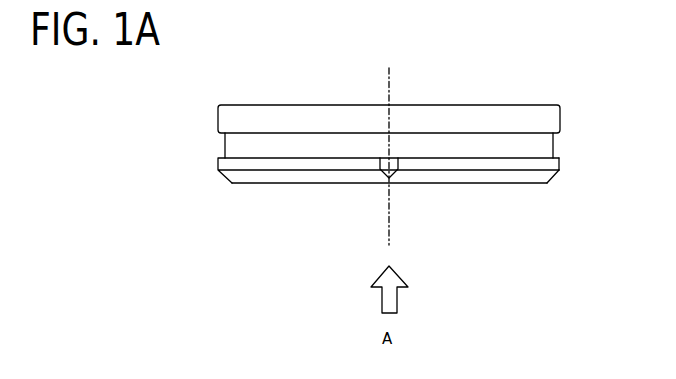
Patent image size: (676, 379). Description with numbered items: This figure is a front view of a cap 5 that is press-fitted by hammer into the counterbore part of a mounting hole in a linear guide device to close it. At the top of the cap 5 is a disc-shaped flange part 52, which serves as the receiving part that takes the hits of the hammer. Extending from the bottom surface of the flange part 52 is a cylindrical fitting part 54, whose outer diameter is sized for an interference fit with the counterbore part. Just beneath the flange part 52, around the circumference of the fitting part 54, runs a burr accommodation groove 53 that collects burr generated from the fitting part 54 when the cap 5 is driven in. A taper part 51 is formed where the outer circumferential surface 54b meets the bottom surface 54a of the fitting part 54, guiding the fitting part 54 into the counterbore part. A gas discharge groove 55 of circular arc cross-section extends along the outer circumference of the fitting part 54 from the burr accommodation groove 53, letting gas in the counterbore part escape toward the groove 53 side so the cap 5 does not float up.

The cap 5 is at (401, 133).
The taper part 51 is at (545, 177).
The flange part 52 is at (530, 105).
The burr accommodation groove 53 is at (537, 145).
The fitting part 54 is at (220, 161).
The bottom surface 54a is at (285, 184).
The outer circumferential surface 54b is at (558, 162).
The gas discharge groove 55 is at (393, 171).